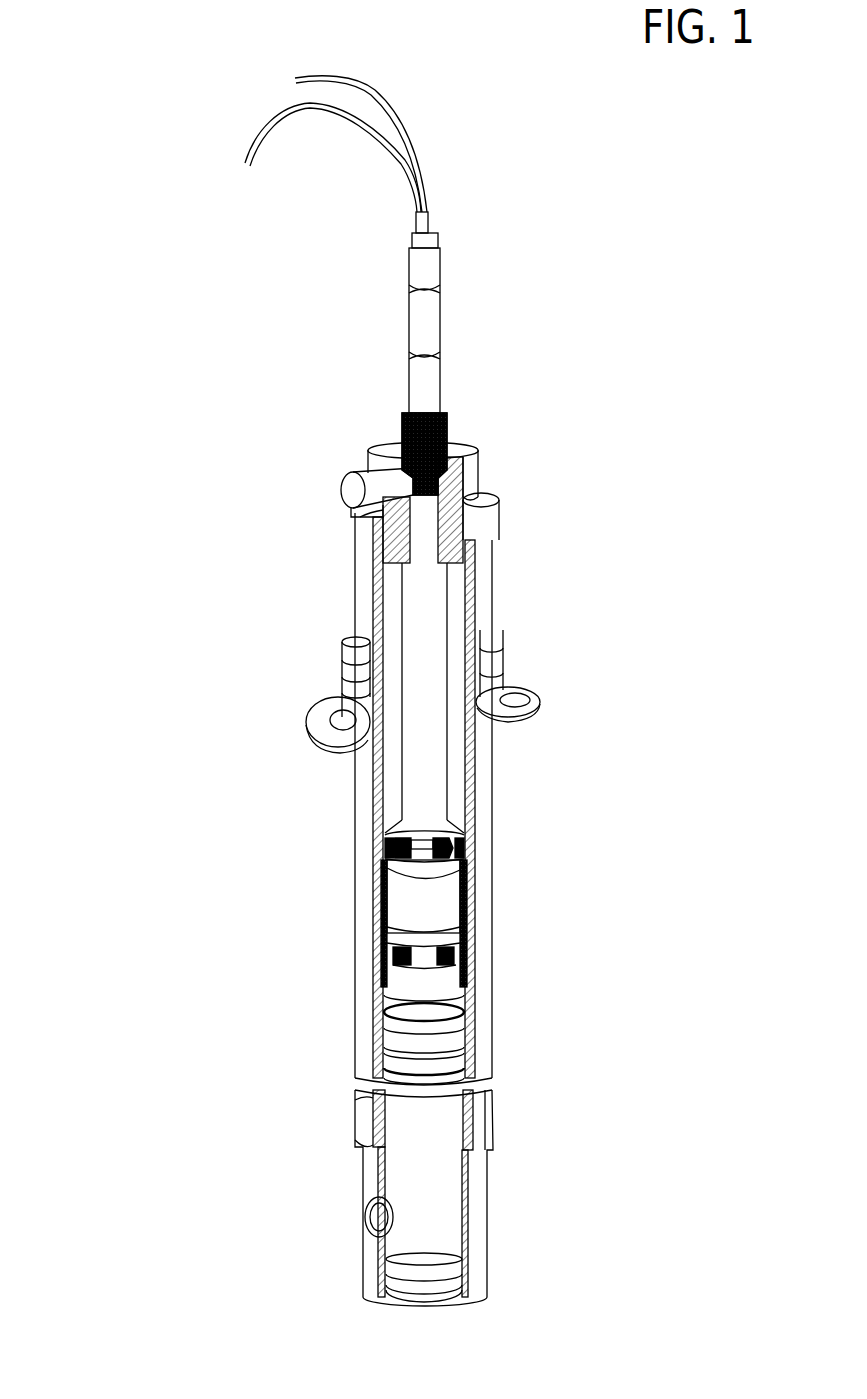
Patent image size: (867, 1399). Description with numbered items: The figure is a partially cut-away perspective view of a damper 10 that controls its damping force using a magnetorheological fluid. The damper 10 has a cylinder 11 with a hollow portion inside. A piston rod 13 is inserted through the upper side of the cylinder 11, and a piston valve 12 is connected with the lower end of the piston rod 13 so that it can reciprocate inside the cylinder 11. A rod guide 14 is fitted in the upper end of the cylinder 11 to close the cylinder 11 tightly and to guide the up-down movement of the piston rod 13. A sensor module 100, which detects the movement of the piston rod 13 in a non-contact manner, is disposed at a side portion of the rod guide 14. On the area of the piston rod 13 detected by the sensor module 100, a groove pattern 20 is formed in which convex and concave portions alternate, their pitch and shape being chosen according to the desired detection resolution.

The damper 10 is at (190, 716).
The cylinder 11 is at (370, 848).
The piston valve 12 is at (372, 905).
The piston rod 13 is at (396, 600).
The rod guide 14 is at (480, 478).
The groove pattern 20 is at (445, 418).
The sensor module 100 is at (328, 484).